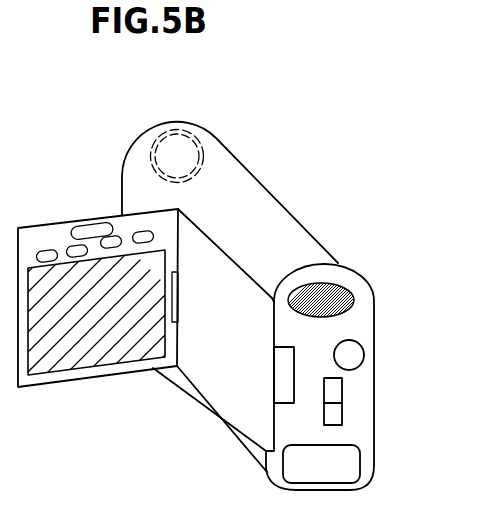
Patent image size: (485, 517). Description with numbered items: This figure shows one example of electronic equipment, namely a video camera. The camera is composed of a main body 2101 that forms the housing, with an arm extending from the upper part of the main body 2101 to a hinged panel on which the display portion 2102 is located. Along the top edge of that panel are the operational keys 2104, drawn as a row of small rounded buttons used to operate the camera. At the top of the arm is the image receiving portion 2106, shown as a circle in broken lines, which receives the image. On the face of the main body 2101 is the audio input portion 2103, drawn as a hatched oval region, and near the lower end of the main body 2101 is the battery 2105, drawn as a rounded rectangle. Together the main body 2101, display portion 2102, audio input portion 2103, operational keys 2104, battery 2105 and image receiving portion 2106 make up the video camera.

The main body 2101 is at (238, 200).
The display portion 2102 is at (90, 342).
The audio input portion 2103 is at (335, 300).
The operational keys 2104 is at (49, 256).
The battery 2105 is at (307, 460).
The image receiving portion 2106 is at (176, 130).